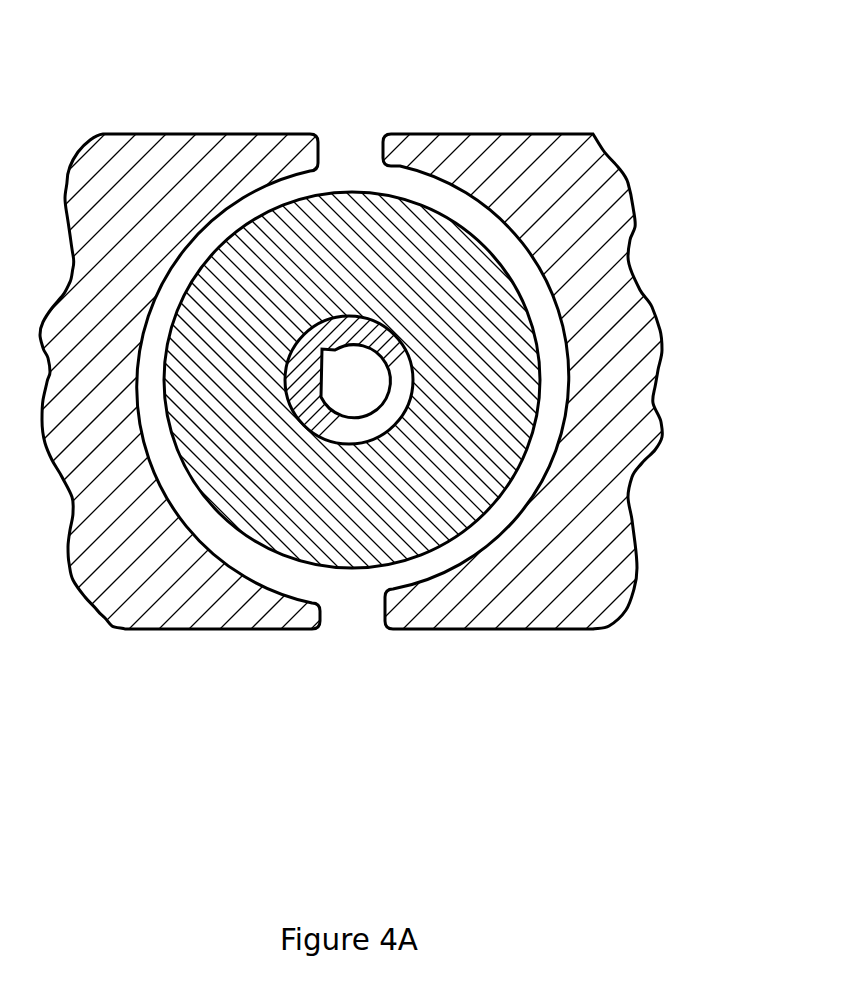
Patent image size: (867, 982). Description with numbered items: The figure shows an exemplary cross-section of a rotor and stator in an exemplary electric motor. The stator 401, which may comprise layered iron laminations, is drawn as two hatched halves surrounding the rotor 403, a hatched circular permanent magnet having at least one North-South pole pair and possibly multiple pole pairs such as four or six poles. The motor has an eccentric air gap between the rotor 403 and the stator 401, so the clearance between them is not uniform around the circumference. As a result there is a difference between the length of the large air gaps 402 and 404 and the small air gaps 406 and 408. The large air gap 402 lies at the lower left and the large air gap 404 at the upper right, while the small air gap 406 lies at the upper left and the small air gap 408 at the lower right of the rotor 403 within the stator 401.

The stator 401 is at (615, 224).
The rotor 403 is at (520, 460).
The large air gap 402 is at (298, 576).
The large air gap 404 is at (396, 182).
The small air gap 406 is at (298, 188).
The small air gap 408 is at (389, 577).